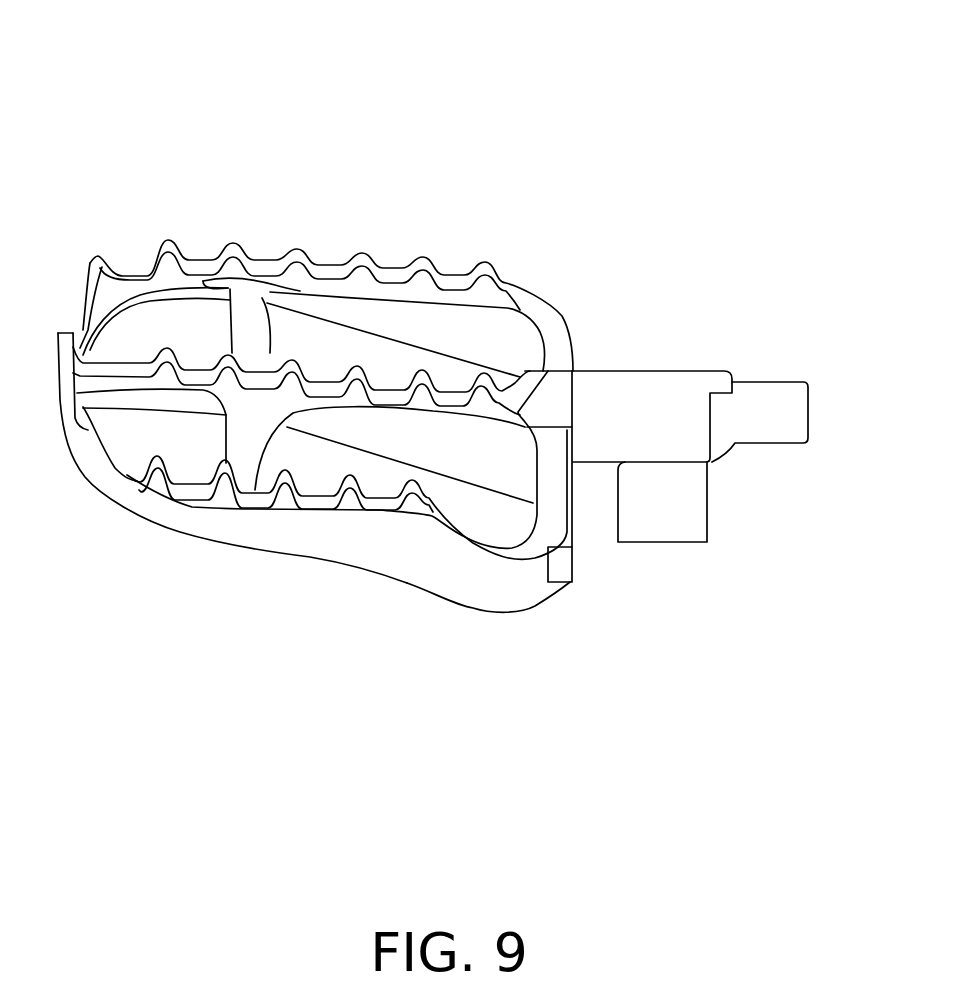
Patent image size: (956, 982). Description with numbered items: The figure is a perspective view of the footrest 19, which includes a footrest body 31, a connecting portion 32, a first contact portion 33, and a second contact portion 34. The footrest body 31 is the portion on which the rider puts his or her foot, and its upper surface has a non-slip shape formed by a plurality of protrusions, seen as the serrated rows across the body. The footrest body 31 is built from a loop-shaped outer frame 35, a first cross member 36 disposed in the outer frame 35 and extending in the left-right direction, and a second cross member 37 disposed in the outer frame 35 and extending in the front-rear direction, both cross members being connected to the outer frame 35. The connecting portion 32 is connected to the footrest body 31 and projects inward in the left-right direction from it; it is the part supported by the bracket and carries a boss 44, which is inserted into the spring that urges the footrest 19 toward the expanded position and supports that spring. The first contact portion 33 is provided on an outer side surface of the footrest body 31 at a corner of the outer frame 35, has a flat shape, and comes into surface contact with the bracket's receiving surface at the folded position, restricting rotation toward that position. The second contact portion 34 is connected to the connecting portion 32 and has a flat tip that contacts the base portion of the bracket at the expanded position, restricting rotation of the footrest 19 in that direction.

The footrest 19 is at (345, 128).
The footrest body 31 is at (272, 577).
The connecting portion 32 is at (637, 400).
The first contact portion 33 is at (552, 568).
The second contact portion 34 is at (778, 400).
The outer frame 35 is at (373, 542).
The first cross member 36 is at (357, 383).
The second cross member 37 is at (253, 320).
The boss 44 is at (662, 523).